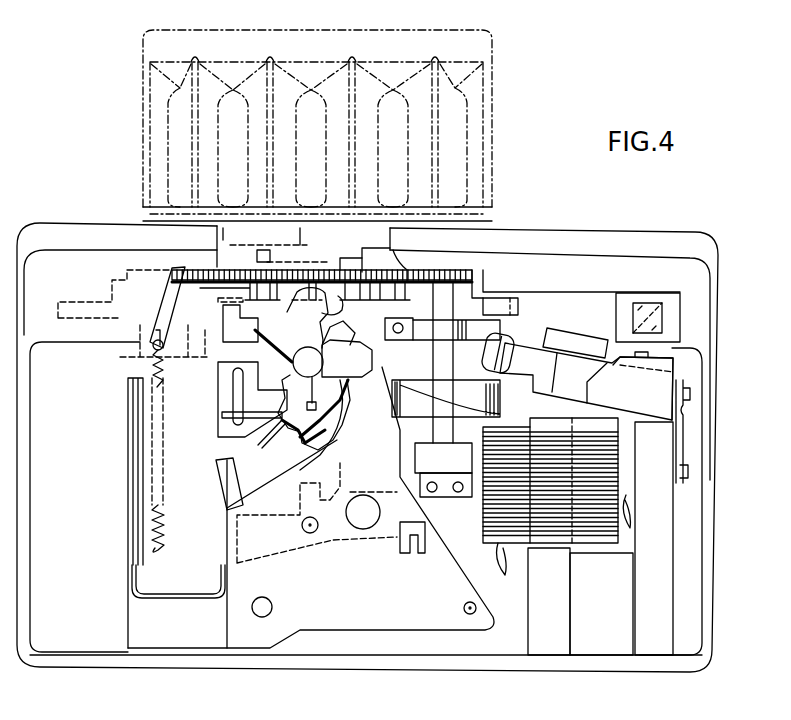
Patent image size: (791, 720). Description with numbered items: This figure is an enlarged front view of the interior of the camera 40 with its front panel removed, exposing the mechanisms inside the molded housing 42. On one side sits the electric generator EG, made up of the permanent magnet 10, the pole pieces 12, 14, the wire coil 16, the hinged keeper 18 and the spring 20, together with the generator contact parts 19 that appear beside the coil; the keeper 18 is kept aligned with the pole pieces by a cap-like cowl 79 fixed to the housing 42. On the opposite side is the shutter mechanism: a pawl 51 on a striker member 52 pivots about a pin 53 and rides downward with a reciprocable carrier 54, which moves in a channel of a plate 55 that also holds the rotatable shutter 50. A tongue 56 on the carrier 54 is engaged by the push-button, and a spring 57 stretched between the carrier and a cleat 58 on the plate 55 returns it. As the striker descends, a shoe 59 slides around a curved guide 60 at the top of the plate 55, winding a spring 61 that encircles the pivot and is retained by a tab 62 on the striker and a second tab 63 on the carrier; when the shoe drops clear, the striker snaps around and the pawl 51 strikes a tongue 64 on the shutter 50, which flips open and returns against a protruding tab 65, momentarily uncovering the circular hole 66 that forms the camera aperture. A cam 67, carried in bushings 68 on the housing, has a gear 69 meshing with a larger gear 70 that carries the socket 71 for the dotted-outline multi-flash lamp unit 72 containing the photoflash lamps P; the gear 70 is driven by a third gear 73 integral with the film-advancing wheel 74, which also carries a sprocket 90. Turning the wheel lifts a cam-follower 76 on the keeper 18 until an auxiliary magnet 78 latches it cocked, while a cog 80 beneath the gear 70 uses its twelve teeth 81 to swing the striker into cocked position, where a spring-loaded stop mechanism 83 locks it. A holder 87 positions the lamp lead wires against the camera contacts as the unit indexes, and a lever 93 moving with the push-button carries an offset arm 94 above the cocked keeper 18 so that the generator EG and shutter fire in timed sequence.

The photoflash lamp P is at (343, 100).
The permanent magnet 10 is at (605, 656).
The pole piece 12 is at (545, 656).
The pole piece 14 is at (662, 656).
The wire coil 16 is at (590, 528).
The hinged keeper 18 is at (582, 373).
The contact springs 19 is at (510, 567).
The spring 20 is at (685, 419).
The camera 40 is at (69, 699).
The housing 42 is at (720, 289).
The shutter 50 is at (268, 547).
The pawl 51 is at (300, 452).
The striker member 52 is at (338, 393).
The pin 53 is at (324, 356).
The carrier 54 is at (185, 592).
The plate 55 is at (352, 628).
The tongue 56 is at (140, 404).
The spring 57 is at (163, 512).
The cleat 58 is at (142, 340).
The shoe 59 is at (340, 311).
The curved guide 60 is at (344, 336).
The spring 61 is at (270, 342).
The tab 62 is at (338, 423).
The second tab 63 is at (232, 344).
The tongue 64 is at (285, 486).
The protruding tab 65 is at (412, 553).
The circular hole 66 is at (362, 529).
The cam 67 is at (495, 401).
The bushings 68 is at (425, 338).
The gear 69 is at (462, 262).
The gear 70 is at (408, 265).
The socket 71 is at (348, 257).
The multi-flash lamp unit 72 is at (492, 50).
The third gear 73 is at (176, 268).
The film-advancing wheel 74 is at (87, 300).
The cam-follower 76 is at (518, 345).
The auxiliary magnet 78 is at (580, 338).
The cowl 79 is at (668, 369).
The cog 80 is at (370, 278).
The teeth 81 is at (405, 292).
The spring-loaded stop mechanism 83 is at (235, 403).
The contact holder 87 is at (247, 227).
The sprocket 90 is at (168, 358).
The lever 93 is at (680, 317).
The offset arm 94 is at (525, 298).
The electric generator EG is at (678, 516).